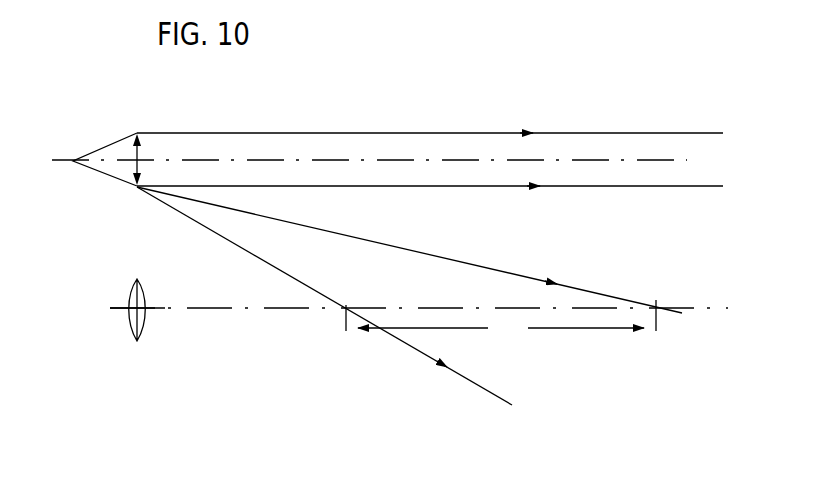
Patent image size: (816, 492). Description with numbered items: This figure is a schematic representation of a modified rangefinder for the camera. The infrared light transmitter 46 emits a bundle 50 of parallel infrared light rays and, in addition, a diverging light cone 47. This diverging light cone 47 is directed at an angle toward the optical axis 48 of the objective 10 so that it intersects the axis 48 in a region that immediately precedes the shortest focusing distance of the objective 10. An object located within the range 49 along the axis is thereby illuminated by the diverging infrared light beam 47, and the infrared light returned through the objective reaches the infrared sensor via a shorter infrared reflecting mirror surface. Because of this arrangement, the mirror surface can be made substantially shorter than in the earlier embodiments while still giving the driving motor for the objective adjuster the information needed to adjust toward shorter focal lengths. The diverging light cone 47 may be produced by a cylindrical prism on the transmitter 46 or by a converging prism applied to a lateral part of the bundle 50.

The objective 10 is at (142, 332).
The transmitter 46 is at (117, 170).
The diverging light cone 47 is at (240, 244).
The optical axis 48 is at (275, 313).
The range 49 is at (506, 310).
The bundle of parallel light rays 50 is at (337, 145).